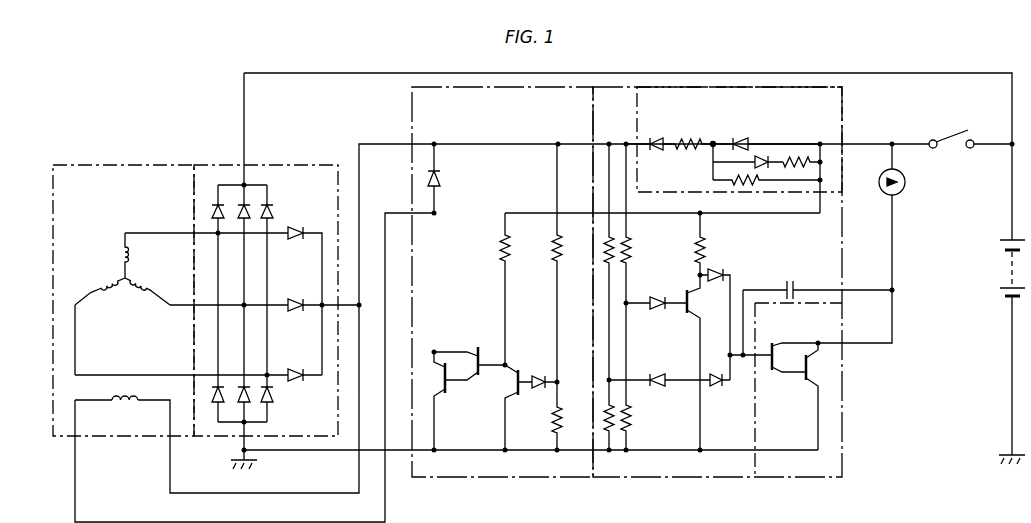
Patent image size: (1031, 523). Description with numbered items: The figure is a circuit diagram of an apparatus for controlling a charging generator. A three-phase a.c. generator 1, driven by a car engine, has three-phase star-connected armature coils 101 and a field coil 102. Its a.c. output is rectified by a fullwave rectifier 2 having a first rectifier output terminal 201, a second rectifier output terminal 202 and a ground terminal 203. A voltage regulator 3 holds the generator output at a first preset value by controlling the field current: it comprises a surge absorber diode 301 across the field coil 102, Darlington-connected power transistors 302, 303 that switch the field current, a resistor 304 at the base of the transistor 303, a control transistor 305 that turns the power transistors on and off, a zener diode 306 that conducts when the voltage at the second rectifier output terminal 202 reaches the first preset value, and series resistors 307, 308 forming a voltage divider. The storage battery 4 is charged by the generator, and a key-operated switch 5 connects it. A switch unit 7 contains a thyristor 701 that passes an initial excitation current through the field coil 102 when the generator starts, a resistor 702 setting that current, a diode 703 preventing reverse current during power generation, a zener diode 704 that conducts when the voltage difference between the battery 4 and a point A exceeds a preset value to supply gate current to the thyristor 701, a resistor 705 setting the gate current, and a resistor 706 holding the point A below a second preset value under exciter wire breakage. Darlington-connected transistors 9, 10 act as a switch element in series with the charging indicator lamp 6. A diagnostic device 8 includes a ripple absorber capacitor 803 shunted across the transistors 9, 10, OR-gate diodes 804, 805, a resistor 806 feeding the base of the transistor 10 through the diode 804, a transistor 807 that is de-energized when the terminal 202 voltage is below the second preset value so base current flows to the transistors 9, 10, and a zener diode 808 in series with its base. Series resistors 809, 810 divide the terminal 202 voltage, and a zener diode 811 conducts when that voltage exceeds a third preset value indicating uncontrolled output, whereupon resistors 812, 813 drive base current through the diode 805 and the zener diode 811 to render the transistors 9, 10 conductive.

The three-phase a.c. generator 1 is at (122, 165).
The fullwave rectifier 2 is at (258, 165).
The voltage regulator 3 is at (458, 470).
The storage battery 4 is at (1000, 264).
The key-operated switch 5 is at (950, 128).
The charging indicator lamp 6 is at (905, 181).
The switch unit 7 is at (833, 103).
The diagnostic device 8 is at (743, 470).
The transistor 9 is at (808, 392).
The transistor 10 is at (775, 382).
The armature coils 101 is at (125, 278).
The field coil 102 is at (118, 402).
The first rectifier output terminal 201 is at (273, 200).
The second rectifier output terminal 202 is at (318, 290).
The ground terminal 203 is at (276, 408).
The surge absorber diode 301 is at (446, 178).
The power transistor 302 is at (440, 400).
The power transistor 303 is at (480, 350).
The resistor 304 is at (498, 250).
The control transistor 305 is at (508, 394).
The zener diode 306 is at (538, 372).
The resistor 307 is at (550, 258).
The resistor 308 is at (552, 418).
The thyristor 701 is at (740, 138).
The resistor 702 is at (694, 132).
The diode 703 is at (655, 138).
The zener diode 704 is at (762, 157).
The resistor 705 is at (800, 157).
The resistor 706 is at (728, 181).
The point A is at (713, 142).
The ripple absorber capacitor 803 is at (790, 280).
The diode 804 is at (716, 272).
The diode 805 is at (724, 387).
The resistor 806 is at (704, 255).
The transistor 807 is at (698, 325).
The zener diode 808 is at (655, 308).
The resistor 809 is at (631, 252).
The resistor 810 is at (632, 418).
The zener diode 811 is at (664, 387).
The resistor 812 is at (612, 258).
The resistor 813 is at (602, 428).